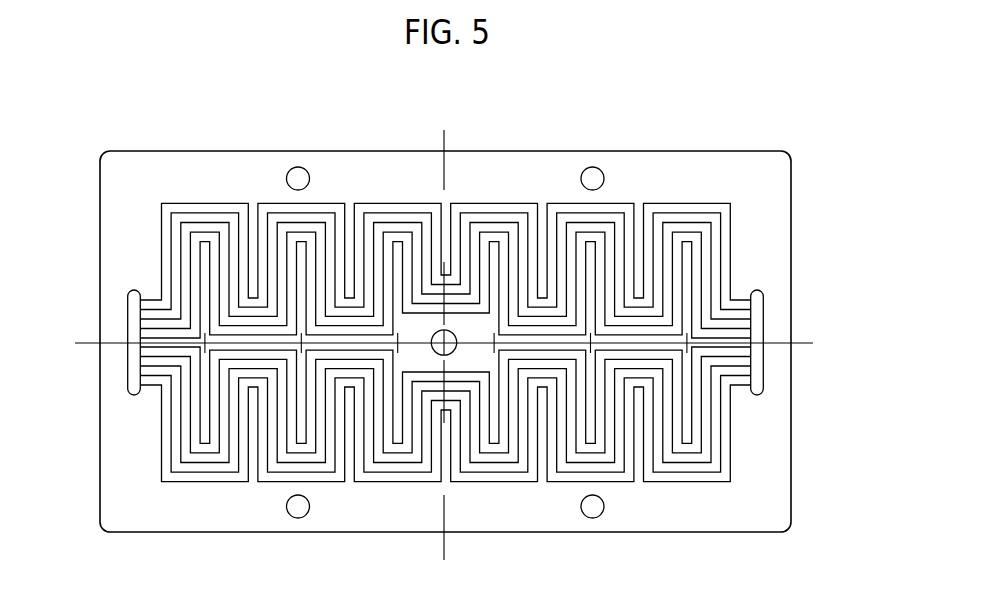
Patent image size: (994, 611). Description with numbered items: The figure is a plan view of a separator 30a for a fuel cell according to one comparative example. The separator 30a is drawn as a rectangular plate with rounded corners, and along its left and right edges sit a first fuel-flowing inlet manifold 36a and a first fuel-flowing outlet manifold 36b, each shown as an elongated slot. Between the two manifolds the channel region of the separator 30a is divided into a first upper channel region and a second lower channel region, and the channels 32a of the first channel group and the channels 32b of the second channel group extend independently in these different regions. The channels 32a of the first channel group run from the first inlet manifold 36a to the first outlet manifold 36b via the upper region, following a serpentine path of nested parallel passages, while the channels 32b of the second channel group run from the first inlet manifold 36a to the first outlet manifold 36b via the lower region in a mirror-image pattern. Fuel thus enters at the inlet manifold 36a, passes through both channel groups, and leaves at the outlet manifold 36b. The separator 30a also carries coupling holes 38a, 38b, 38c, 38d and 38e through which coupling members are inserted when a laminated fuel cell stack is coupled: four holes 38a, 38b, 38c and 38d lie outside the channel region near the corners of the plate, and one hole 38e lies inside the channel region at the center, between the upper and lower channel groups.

The separator 30a is at (181, 104).
The channels of the first channel group 32a is at (731, 242).
The channels of the second channel group 32b is at (731, 437).
The first fuel-flowing inlet manifold 36a is at (133, 320).
The first fuel-flowing outlet manifold 36b is at (757, 320).
The coupling hole 38a is at (299, 176).
The coupling hole 38b is at (593, 176).
The coupling hole 38c is at (594, 508).
The coupling hole 38d is at (299, 508).
The coupling hole 38e is at (438, 350).